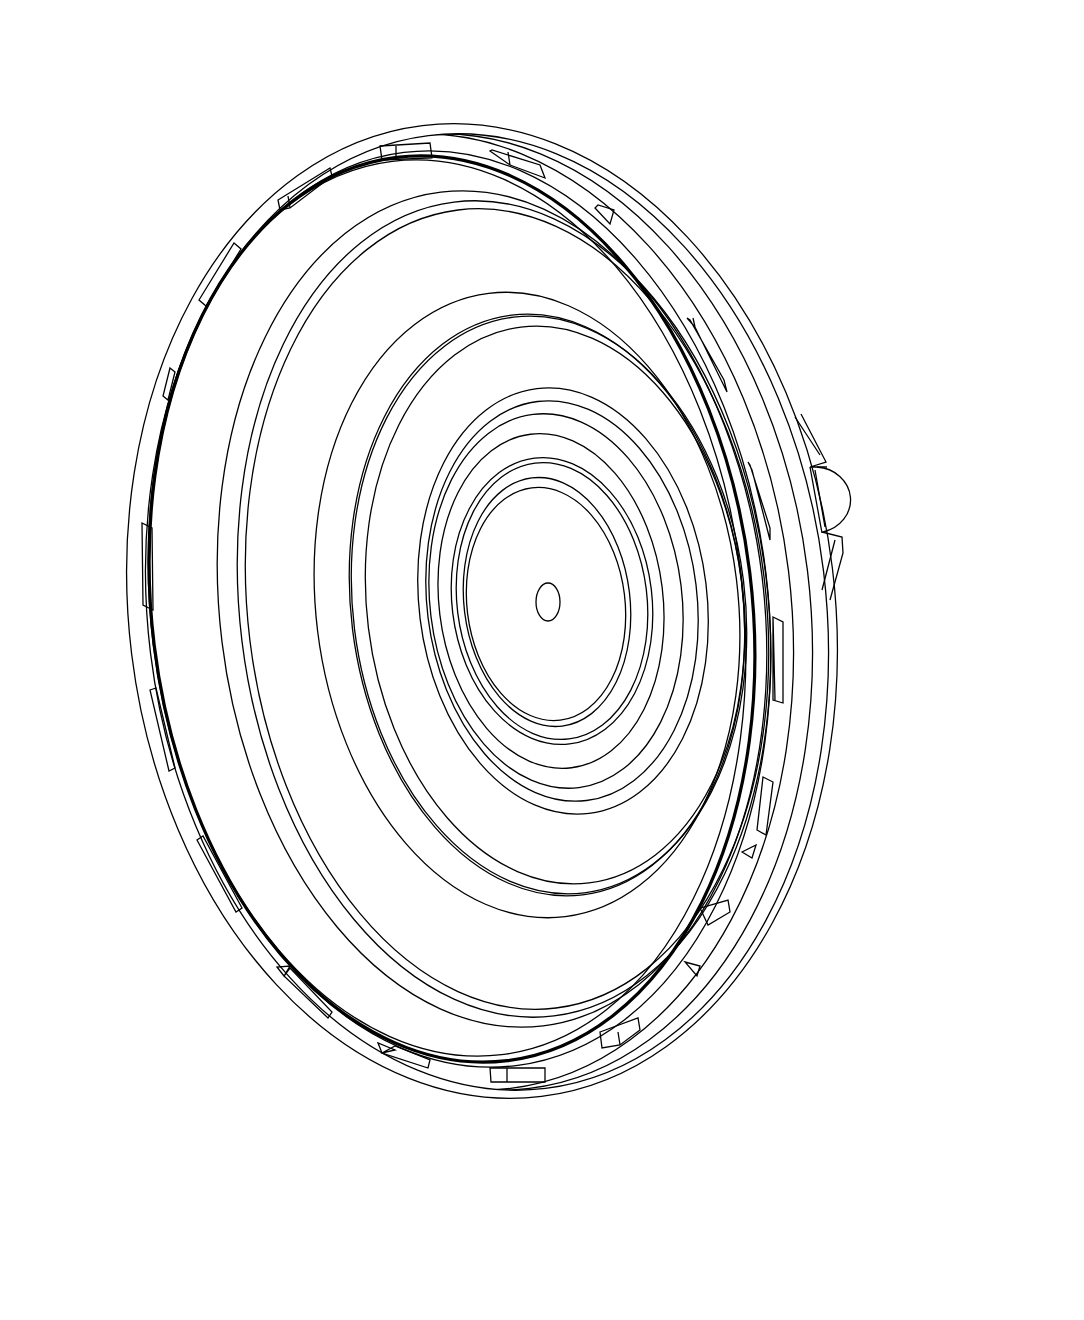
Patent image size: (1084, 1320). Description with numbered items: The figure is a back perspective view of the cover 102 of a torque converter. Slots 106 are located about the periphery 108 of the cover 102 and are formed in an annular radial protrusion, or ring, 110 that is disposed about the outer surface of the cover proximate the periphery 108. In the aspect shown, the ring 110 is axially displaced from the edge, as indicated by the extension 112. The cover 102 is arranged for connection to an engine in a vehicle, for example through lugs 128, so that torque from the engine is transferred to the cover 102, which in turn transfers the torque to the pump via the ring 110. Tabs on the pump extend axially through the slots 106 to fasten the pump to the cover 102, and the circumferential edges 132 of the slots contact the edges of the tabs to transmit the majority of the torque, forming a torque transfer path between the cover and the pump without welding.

The cover 102 is at (791, 91).
The slots 106 is at (410, 148).
The periphery 108 is at (740, 877).
The annular radial protrusion 110 is at (548, 150).
The extension 112 is at (365, 170).
The lugs 128 is at (833, 482).
The edges of the slots 132 is at (288, 203).